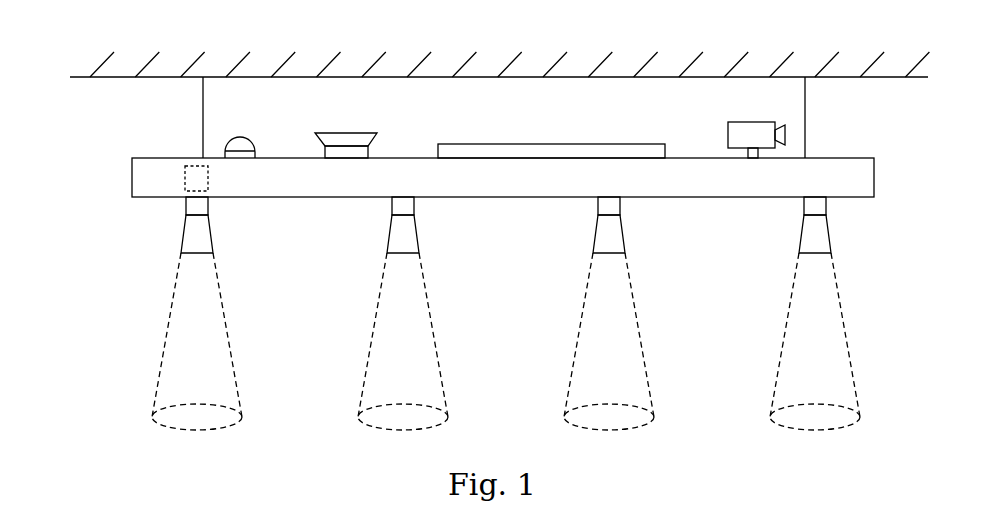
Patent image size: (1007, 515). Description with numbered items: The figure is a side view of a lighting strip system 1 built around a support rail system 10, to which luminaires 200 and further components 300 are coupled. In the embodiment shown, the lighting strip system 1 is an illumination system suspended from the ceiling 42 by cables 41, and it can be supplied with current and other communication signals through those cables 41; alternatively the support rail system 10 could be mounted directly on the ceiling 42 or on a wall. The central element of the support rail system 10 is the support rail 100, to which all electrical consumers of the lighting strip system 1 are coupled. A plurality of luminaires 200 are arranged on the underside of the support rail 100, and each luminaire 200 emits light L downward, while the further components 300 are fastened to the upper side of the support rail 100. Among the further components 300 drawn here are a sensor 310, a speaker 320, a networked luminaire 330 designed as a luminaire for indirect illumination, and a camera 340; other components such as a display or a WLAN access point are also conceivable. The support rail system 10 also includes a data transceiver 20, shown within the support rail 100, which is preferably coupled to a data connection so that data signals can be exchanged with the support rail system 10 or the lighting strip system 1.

The lighting strip system 1 is at (70, 117).
The support rail system 10 is at (124, 166).
The data transceiver 20 is at (185, 178).
The cables 41 is at (203, 118).
The ceiling 42 is at (128, 58).
The support rail 100 is at (148, 157).
The luminaires 200 is at (182, 237).
The further components 300 is at (830, 128).
The sensor 310 is at (249, 137).
The speaker 320 is at (370, 133).
The networked luminaire 330 is at (615, 144).
The camera 340 is at (728, 128).
The light L is at (178, 352).